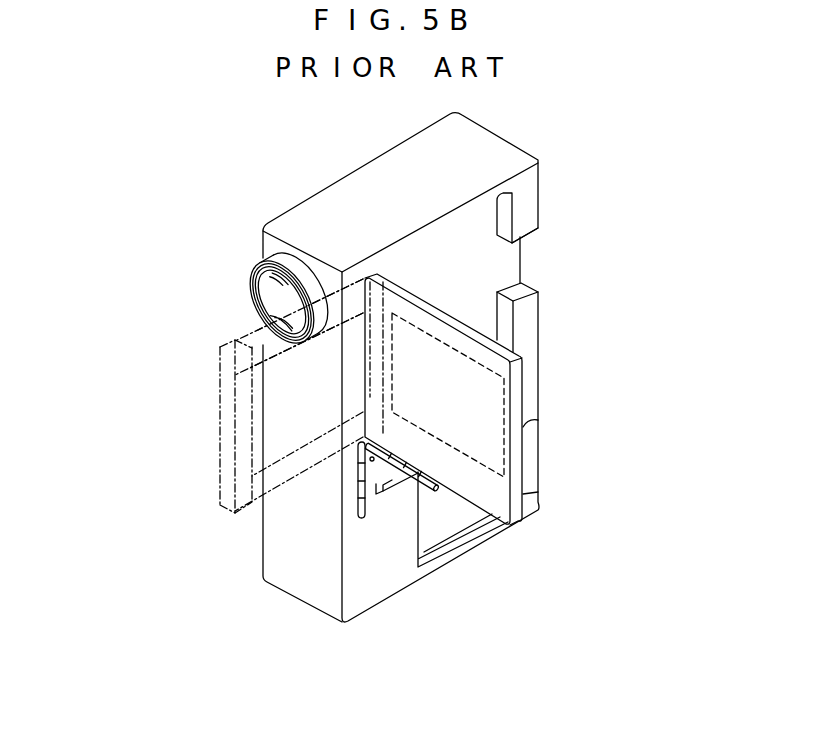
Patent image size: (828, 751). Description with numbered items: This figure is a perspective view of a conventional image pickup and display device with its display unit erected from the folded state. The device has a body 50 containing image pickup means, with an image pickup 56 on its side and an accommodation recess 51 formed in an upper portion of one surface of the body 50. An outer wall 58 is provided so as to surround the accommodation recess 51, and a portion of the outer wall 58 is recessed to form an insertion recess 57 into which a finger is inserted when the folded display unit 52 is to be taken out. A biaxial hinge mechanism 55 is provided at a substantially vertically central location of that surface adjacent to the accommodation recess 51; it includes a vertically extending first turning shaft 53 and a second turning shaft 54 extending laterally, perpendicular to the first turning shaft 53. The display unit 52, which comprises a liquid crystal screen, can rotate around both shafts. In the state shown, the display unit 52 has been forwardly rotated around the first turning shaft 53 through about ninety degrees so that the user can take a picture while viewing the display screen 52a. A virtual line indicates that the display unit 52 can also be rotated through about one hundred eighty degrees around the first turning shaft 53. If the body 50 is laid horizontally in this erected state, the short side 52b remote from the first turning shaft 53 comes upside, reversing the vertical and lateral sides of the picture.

The body 50 is at (322, 210).
The accommodation recess 51 is at (468, 303).
The display unit 52 is at (412, 302).
The display screen 52a is at (232, 393).
The short side 52b is at (517, 447).
The first turning shaft 53 is at (356, 516).
The second turning shaft 54 is at (412, 476).
The biaxial hinge mechanism 55 is at (381, 496).
The image pickup 56 is at (283, 292).
The insertion recess 57 is at (508, 263).
The outer wall 58 is at (530, 213).